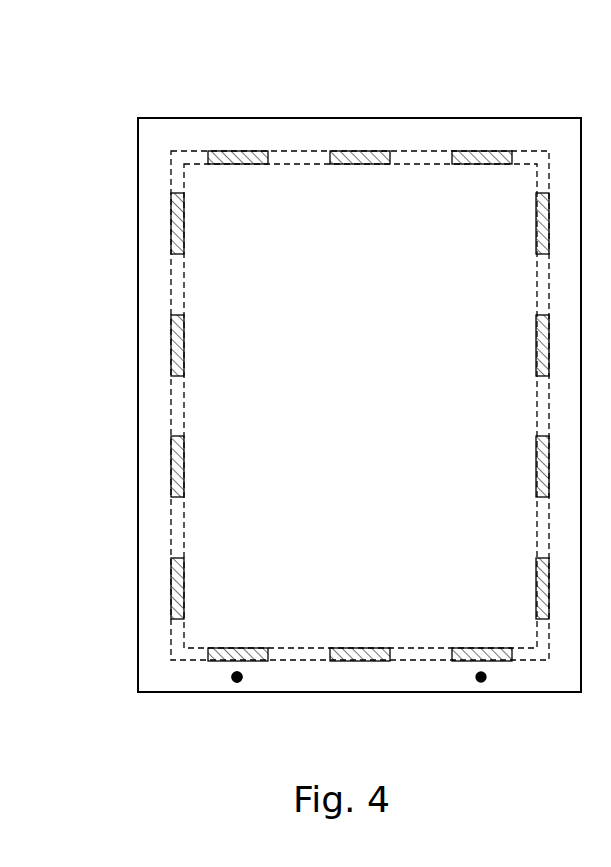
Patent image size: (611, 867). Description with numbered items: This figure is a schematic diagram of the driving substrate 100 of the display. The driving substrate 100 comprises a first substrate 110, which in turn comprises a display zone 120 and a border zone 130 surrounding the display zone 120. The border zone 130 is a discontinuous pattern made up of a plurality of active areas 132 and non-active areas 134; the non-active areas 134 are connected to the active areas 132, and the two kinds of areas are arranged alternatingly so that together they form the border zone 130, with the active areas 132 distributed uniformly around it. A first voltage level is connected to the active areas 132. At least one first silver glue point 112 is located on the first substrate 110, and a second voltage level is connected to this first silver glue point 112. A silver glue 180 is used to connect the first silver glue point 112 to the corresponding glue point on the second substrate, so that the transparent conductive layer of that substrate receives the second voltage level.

The driving substrate 100 is at (311, 388).
The first substrate 110 is at (158, 117).
The first silver glue point 112 is at (237, 683).
The display zone 120 is at (382, 404).
The border zone 130 is at (368, 357).
The active area 132 is at (237, 152).
The non-active area 134 is at (293, 157).
The silver glue 180 is at (232, 677).